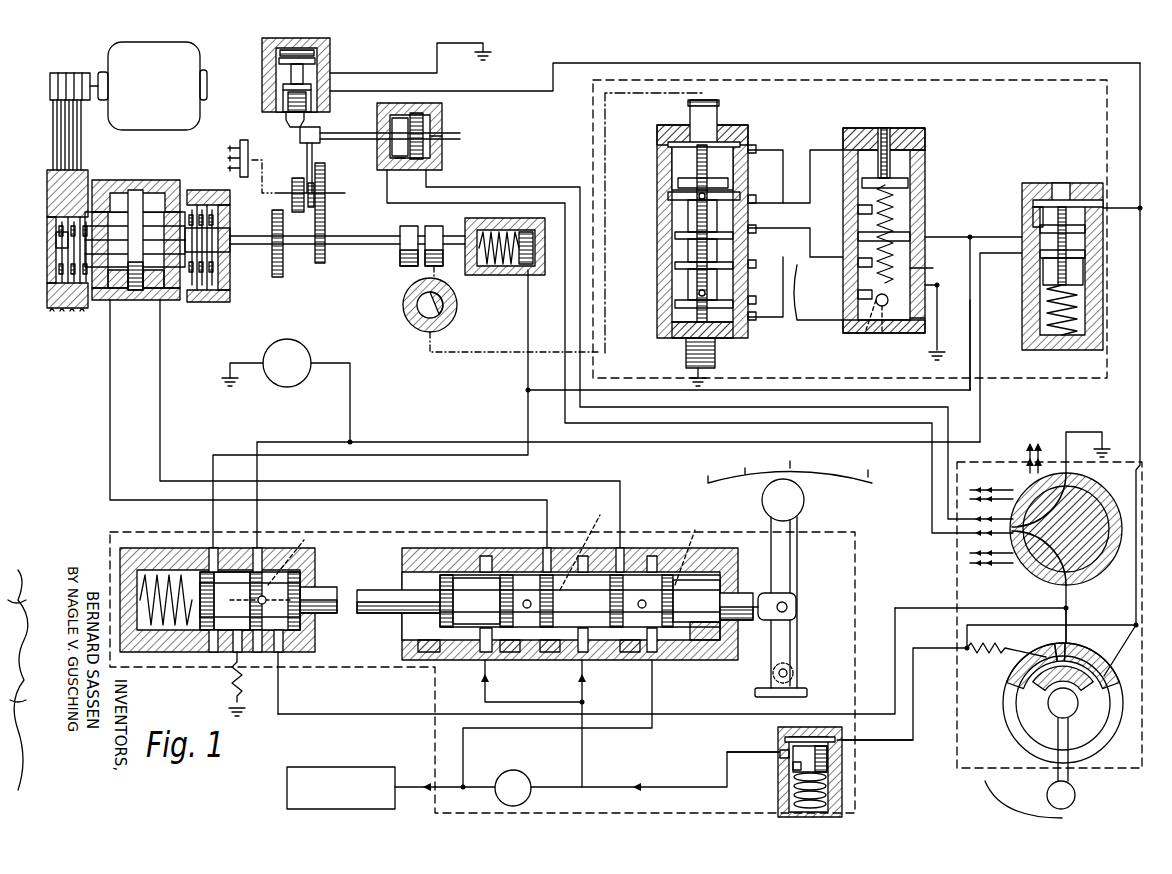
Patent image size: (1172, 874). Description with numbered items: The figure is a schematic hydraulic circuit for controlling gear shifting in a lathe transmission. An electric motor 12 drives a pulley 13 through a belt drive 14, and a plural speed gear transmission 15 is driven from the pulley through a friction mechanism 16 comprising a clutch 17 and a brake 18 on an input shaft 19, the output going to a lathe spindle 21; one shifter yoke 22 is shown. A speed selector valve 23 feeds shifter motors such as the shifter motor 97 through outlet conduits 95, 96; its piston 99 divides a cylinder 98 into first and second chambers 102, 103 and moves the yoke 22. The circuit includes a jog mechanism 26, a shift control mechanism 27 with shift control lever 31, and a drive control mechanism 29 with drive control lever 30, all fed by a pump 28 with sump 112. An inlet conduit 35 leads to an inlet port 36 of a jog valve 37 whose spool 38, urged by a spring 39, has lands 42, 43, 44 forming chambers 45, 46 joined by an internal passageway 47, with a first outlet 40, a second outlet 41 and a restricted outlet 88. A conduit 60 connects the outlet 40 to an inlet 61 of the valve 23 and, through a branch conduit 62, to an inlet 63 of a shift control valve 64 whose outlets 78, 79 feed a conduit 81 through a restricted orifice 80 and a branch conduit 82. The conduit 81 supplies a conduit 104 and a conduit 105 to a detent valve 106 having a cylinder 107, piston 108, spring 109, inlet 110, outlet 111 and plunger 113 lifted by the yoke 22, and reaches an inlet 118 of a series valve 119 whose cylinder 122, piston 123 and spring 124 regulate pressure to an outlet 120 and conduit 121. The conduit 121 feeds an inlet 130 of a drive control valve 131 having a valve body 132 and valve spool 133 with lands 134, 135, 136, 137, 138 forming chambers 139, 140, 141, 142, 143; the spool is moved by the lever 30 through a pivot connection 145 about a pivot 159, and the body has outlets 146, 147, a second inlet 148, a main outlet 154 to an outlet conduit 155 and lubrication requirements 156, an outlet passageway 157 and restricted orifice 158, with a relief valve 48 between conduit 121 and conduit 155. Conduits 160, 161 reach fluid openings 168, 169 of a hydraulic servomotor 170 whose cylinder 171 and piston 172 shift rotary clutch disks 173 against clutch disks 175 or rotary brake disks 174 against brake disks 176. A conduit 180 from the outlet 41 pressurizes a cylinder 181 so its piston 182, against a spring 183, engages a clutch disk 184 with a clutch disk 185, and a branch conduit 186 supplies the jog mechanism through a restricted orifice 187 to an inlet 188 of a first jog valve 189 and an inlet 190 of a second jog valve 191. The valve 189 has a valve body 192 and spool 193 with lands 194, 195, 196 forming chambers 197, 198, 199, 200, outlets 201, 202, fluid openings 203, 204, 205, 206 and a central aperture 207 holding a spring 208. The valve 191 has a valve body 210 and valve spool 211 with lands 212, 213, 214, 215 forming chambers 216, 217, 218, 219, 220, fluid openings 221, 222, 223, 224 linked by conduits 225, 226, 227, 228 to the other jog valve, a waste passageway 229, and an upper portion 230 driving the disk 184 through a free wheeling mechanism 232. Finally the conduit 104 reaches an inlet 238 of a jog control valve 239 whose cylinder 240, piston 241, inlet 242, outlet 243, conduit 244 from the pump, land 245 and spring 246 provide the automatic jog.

The electric motor 12 is at (108, 57).
The pulley 13 is at (47, 240).
The belt drive 14 is at (52, 118).
The plural speed gear transmission 15 is at (352, 233).
The friction mechanism 16 is at (132, 237).
The clutch 17 is at (47, 267).
The brake 18 is at (223, 246).
The input shaft 19 is at (239, 242).
The lathe spindle 21 is at (236, 140).
The shifter yoke 22 is at (306, 162).
The speed selector valve 23 is at (1018, 600).
The jog mechanism 26 is at (835, 242).
The shift control mechanism 27 is at (990, 713).
The pump 28 is at (298, 344).
The drive control mechanism 29 is at (856, 579).
The drive control lever 30 is at (786, 571).
The shift control lever 31 is at (1074, 794).
The inlet conduit 35 is at (268, 438).
The inlet port 36 is at (258, 572).
The jog valve 37 is at (234, 609).
The valve spool 38 is at (306, 568).
The spring 39 is at (163, 570).
The first outlet 40 is at (284, 658).
The second outlet 41 is at (208, 560).
The first land 42 is at (204, 575).
The second land 43 is at (226, 575).
The third land 44 is at (314, 628).
The first chamber 45 is at (212, 654).
The second chamber 46 is at (258, 654).
The internal passageway 47 is at (282, 569).
The relief valve 48 is at (520, 770).
The conduit 60 is at (812, 714).
The inlet 61 is at (1046, 589).
The branch conduit 62 is at (1066, 637).
The inlet 63 is at (1054, 648).
The shift control valve 64 is at (1112, 748).
The first outlet 78 is at (1028, 670).
The second outlet 79 is at (1102, 672).
The restricted orifice 80 is at (960, 652).
The conduit 81 is at (1140, 396).
The branch conduit 82 is at (1131, 620).
The restricted outlet 88 is at (232, 690).
The outlet conduit 95 is at (499, 186).
The outlet conduit 96 is at (532, 194).
The shifter motor 97 is at (401, 141).
The cylinder 98 is at (408, 170).
The piston 99 is at (426, 155).
The first chamber 102 is at (392, 150).
The second chamber 103 is at (426, 148).
The conduit 104 is at (1122, 208).
The conduit 105 is at (614, 63).
The detent valve 106 is at (297, 81).
The cylinder 107 is at (277, 72).
The piston 108 is at (277, 60).
The spring 109 is at (316, 60).
The inlet 110 is at (312, 105).
The outlet 111 is at (322, 85).
The sump 112 is at (490, 54).
The plunger 113 is at (284, 122).
The inlet 118 is at (835, 741).
The series valve 119 is at (817, 769).
The outlet 120 is at (780, 756).
The conduit 121 is at (748, 749).
The cylinder 122 is at (828, 764).
The piston 123 is at (794, 765).
The spring 124 is at (827, 794).
The inlet 130 is at (590, 668).
The drive control valve 131 is at (555, 557).
The valve body 132 is at (555, 637).
The valve spool 133 is at (484, 527).
The land 134 is at (504, 575).
The land 135 is at (548, 575).
The land 136 is at (620, 568).
The land 137 is at (444, 565).
The land 138 is at (694, 649).
The chamber 139 is at (440, 653).
The chamber 140 is at (510, 651).
The chamber 141 is at (550, 651).
The chamber 142 is at (632, 660).
The chamber 143 is at (710, 576).
The pivot connection 145 is at (786, 606).
The first outlet 146 is at (560, 548).
The second outlet 147 is at (622, 548).
The second inlet 148 is at (474, 670).
The main outlet 154 is at (658, 660).
The outlet conduit 155 is at (412, 782).
The lubrication requirements 156 is at (350, 767).
The outlet passageway 157 is at (568, 548).
The restricted orifice 158 is at (671, 559).
The pivot 159 is at (792, 672).
The conduit 160 is at (350, 502).
The conduit 161 is at (386, 482).
The fluid opening 168 is at (108, 300).
The fluid opening 169 is at (162, 300).
The hydraulic servomotor 170 is at (110, 180).
The cylinder 171 is at (160, 193).
The piston 172 is at (136, 190).
The rotary clutch disks 173 is at (54, 237).
The rotary brake disks 174 is at (224, 236).
The clutch disks 175 is at (56, 210).
The brake disks 176 is at (218, 211).
The conduit 180 is at (213, 462).
The cylinder 181 is at (495, 274).
The piston 182 is at (524, 274).
The spring 183 is at (505, 256).
The clutch disk 184 is at (436, 226).
The clutch disk 185 is at (408, 266).
The branch conduit 186 is at (948, 394).
The restricted orifice 187 is at (977, 234).
The inlet 188 is at (916, 232).
The first jog valve 189 is at (890, 230).
The inlet 190 is at (750, 225).
The second jog valve 191 is at (697, 234).
The valve body 192 is at (921, 134).
The spool 193 is at (946, 182).
The first land 194 is at (846, 303).
The second land 195 is at (843, 247).
The third land 196 is at (810, 196).
The first chamber 197 is at (932, 318).
The second chamber 198 is at (932, 268).
The third chamber 199 is at (906, 206).
The fourth chamber 200 is at (900, 135).
The first outlet 201 is at (937, 286).
The second outlet 202 is at (908, 166).
The fluid opening 203 is at (842, 333).
The fluid opening 204 is at (796, 270).
The fluid opening 205 is at (848, 228).
The fluid opening 206 is at (846, 135).
The central aperture 207 is at (888, 338).
The spring 208 is at (749, 389).
The valve body 210 is at (664, 125).
The valve spool 211 is at (640, 277).
The first land 212 is at (670, 308).
The second land 213 is at (670, 290).
The third land 214 is at (670, 215).
The fourth land 215 is at (670, 183).
The first chamber 216 is at (670, 318).
The second chamber 217 is at (744, 298).
The third chamber 218 is at (670, 250).
The fourth chamber 219 is at (676, 193).
The fifth chamber 220 is at (675, 155).
The fluid opening 221 is at (722, 340).
The fluid opening 222 is at (750, 268).
The fluid opening 223 is at (752, 195).
The fluid opening 224 is at (754, 145).
The conduit 225 is at (804, 319).
The conduit 226 is at (752, 320).
The conduit 227 is at (796, 208).
The conduit 228 is at (784, 150).
The waste passageway 229 is at (680, 372).
The upper portion 230 is at (722, 111).
The free wheeling mechanism 232 is at (404, 318).
The inlet 238 is at (1090, 200).
The jog control valve 239 is at (1045, 262).
The cylinder 240 is at (1034, 210).
The piston 241 is at (1042, 284).
The inlet 242 is at (1050, 260).
The outlet 243 is at (1040, 242).
The conduit 244 is at (980, 360).
The land 245 is at (1048, 210).
The spring 246 is at (1052, 324).